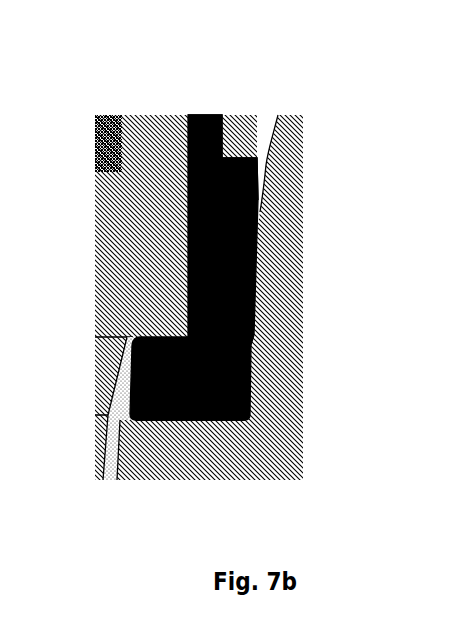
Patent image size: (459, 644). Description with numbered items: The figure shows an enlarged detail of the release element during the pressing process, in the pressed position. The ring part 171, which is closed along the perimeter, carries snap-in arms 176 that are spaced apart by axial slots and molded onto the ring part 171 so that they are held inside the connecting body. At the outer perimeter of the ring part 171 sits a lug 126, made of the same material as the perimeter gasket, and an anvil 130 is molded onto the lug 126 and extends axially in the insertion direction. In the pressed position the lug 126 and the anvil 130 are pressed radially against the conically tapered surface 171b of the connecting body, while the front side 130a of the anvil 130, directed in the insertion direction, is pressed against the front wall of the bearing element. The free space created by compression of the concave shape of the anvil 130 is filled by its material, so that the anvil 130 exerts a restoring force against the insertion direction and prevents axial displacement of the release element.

The lug 126 is at (258, 190).
The anvil 130 is at (250, 370).
The front side of anvil 130a is at (212, 420).
The ring part 171 is at (158, 133).
The conically tapered surface 171b is at (264, 152).
The snap-in arms 176 is at (97, 470).